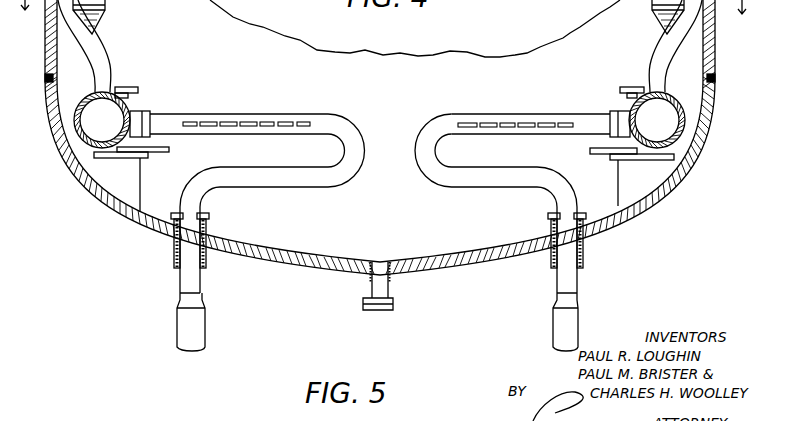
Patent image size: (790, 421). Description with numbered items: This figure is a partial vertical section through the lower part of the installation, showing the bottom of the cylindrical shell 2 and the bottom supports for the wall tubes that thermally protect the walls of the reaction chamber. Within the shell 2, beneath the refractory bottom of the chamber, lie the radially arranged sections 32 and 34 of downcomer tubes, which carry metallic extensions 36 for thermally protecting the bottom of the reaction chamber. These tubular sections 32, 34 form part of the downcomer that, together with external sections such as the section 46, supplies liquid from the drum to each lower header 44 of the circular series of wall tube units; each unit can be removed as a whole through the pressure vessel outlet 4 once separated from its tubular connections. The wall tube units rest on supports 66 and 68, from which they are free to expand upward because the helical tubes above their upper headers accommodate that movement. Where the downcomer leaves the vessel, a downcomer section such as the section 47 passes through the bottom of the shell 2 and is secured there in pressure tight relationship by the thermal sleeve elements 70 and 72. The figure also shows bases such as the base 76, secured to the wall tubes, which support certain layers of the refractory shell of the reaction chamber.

The cylindrical shell 2 is at (453, 268).
The pressure vessel outlet 4 is at (380, 22).
The downcomer tube section 32 is at (262, 96).
The downcomer tube section 34 is at (540, 113).
The metallic extensions 36 is at (272, 122).
The lower header 44 is at (77, 140).
The external downcomer section 46 is at (294, 177).
The downcomer section 47 is at (190, 332).
The support 66 is at (112, 180).
The support 68 is at (648, 178).
The thermal sleeve element 70 is at (212, 214).
The thermal sleeve element 72 is at (208, 266).
The base 76 is at (112, 3).